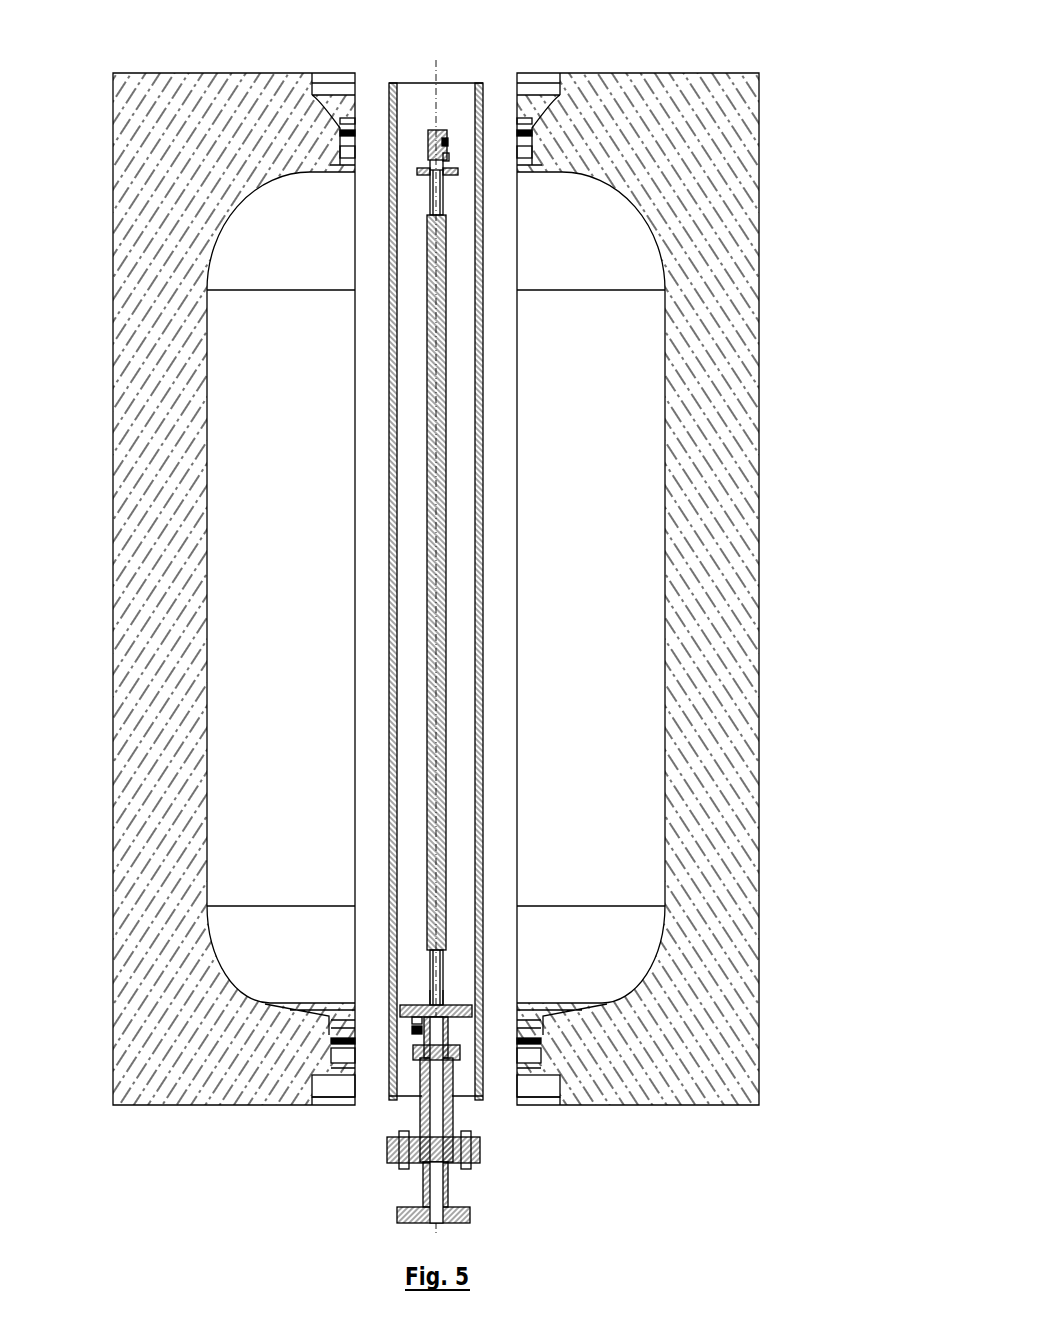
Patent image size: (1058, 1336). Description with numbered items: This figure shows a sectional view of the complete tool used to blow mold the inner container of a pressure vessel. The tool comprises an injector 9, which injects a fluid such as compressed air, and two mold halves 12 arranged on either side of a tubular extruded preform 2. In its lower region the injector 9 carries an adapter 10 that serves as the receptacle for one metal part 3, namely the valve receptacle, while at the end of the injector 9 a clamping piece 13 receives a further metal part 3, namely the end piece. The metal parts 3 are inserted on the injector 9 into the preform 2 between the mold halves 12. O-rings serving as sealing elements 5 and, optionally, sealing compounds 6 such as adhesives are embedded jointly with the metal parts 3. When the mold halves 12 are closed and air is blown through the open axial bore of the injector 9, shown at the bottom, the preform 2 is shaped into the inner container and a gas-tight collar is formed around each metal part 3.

The tubular extruded preform 2 is at (483, 95).
The metal part 3 is at (432, 132).
The sealing element 5 is at (447, 142).
The sealing compound 6 is at (449, 158).
The injector 9 is at (449, 992).
The adapter 10 is at (444, 1048).
The mold half 12 is at (170, 135).
The clamping piece 13 is at (430, 190).